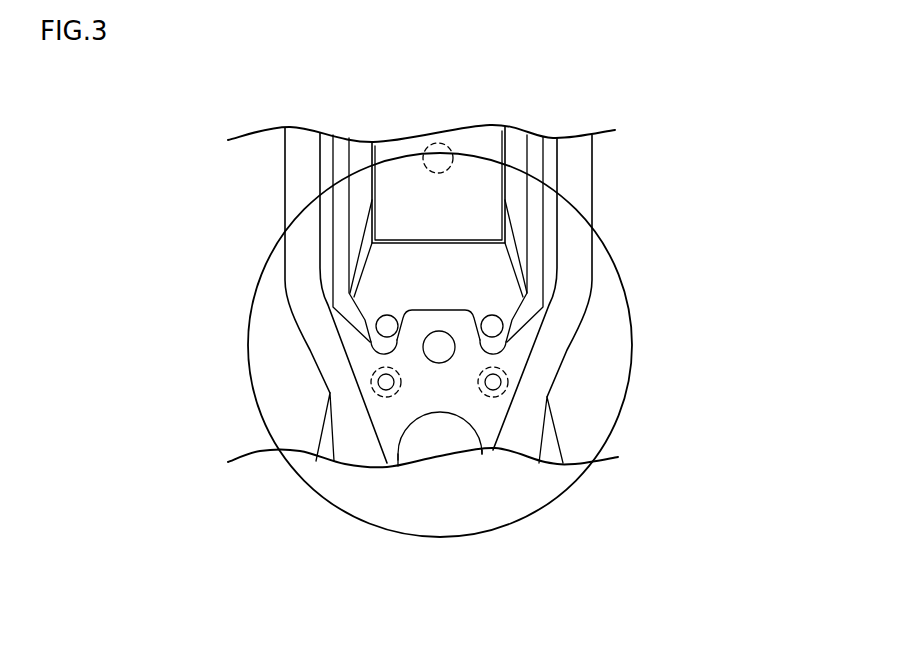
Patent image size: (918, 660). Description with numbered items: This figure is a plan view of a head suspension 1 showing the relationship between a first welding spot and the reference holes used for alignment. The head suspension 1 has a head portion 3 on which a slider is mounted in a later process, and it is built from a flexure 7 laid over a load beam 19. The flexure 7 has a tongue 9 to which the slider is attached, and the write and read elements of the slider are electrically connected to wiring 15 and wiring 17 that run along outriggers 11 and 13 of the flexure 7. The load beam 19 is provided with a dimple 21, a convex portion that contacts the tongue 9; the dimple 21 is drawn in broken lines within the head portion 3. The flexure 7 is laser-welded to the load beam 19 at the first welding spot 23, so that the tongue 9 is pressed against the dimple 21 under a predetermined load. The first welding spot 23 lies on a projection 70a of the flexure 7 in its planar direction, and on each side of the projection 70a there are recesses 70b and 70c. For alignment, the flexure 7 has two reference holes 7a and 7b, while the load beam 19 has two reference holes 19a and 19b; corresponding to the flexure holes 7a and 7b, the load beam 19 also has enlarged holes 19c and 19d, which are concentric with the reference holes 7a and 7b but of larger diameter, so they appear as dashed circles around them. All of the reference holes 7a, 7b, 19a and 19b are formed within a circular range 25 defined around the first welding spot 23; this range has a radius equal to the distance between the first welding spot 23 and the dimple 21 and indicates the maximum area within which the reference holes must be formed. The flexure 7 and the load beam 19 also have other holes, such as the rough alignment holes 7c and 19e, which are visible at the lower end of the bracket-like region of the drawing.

The head suspension 1 is at (582, 110).
The head portion 3 is at (487, 141).
The flexure 7 is at (440, 419).
The reference hole 7a is at (386, 382).
The reference hole 7b is at (493, 382).
The rough alignment hole 7c is at (475, 437).
The tongue 9 is at (507, 153).
The outrigger 11 is at (318, 157).
The outrigger 13 is at (545, 217).
The wiring 15 is at (297, 183).
The wiring 17 is at (578, 192).
The load beam 19 is at (563, 443).
The reference hole 19a is at (387, 326).
The reference hole 19b is at (494, 327).
The enlarged hole 19c is at (381, 396).
The enlarged hole 19d is at (497, 396).
The rough alignment hole 19e is at (463, 524).
The dimple 21 is at (428, 147).
The first welding spot 23 is at (433, 352).
The circular range 25 is at (625, 297).
The projection 70a is at (437, 308).
The recess 70b is at (383, 352).
The recess 70c is at (498, 350).